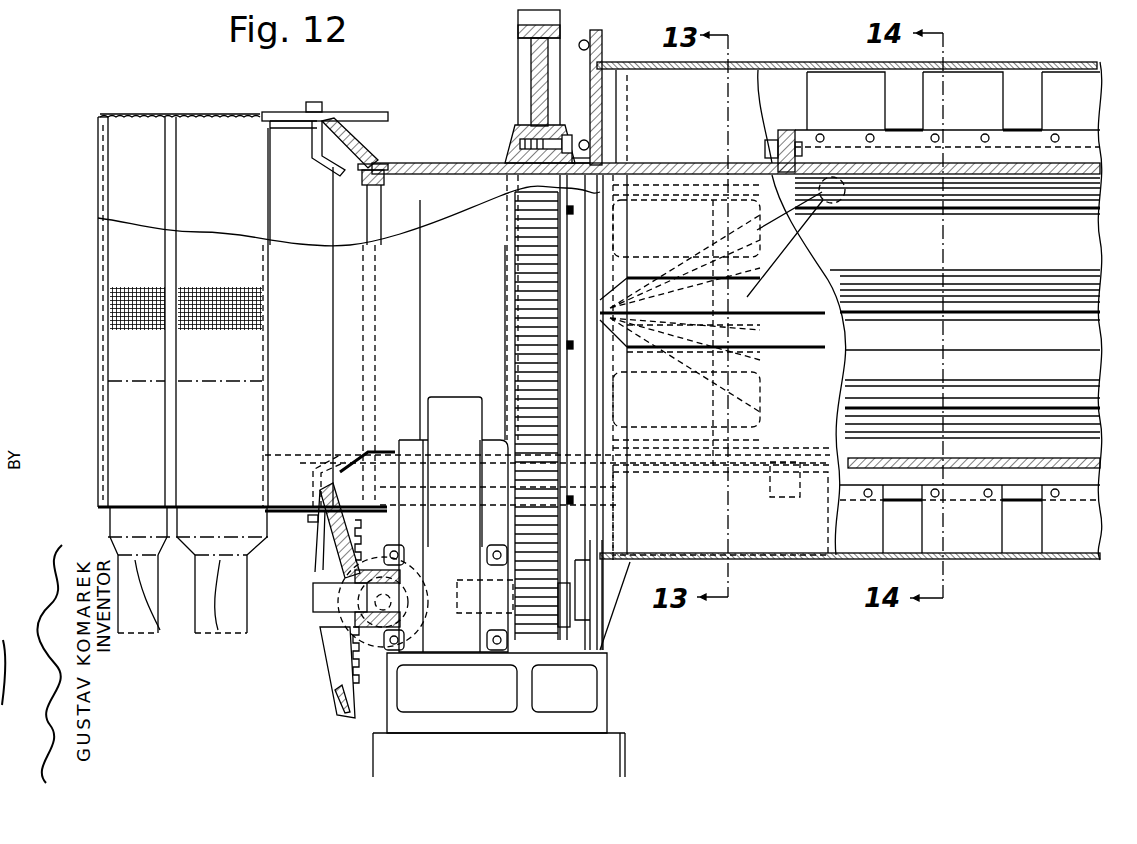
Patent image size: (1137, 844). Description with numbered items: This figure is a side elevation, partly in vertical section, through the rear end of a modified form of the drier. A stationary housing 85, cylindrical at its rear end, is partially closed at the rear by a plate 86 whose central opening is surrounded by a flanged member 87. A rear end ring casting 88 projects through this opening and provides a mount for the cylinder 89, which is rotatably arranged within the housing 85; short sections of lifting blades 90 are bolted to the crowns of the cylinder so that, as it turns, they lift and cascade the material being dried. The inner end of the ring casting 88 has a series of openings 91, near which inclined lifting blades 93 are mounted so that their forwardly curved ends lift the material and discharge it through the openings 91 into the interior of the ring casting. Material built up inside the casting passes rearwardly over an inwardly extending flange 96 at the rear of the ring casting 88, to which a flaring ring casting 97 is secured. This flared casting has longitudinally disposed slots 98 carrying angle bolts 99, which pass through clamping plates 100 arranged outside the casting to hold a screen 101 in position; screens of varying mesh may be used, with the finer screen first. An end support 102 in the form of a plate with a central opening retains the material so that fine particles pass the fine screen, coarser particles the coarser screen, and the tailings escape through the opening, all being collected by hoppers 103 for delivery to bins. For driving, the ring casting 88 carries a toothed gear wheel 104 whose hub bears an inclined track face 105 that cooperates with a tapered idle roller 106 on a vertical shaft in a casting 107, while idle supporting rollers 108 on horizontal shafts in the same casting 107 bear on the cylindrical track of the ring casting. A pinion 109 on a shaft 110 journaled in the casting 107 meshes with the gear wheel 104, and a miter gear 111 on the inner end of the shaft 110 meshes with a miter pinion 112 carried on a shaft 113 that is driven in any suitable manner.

The stationary housing 85 is at (1020, 62).
The plate 86 is at (590, 98).
The flanged member 87 is at (574, 153).
The rear end ring casting 88 is at (440, 163).
The cylinder 89 is at (907, 175).
The lifting blades 90 is at (947, 312).
The openings 91 is at (796, 237).
The inclined lifting blades 93 is at (753, 87).
The inwardly extending flange 96 is at (386, 192).
The flaring ring casting 97 is at (360, 145).
The longitudinally disposed slots 98 is at (296, 128).
The angle bolts 99 is at (318, 160).
The clamping plates 100 is at (342, 112).
The screen 101 is at (217, 117).
The end support 102 is at (97, 170).
The hoppers 103 is at (60, 350).
The toothed gear wheel 104 is at (527, 65).
The inclined track face 105 is at (520, 143).
The tapered idle roller 106 is at (395, 503).
The casting 107 is at (403, 527).
The idle supporting rollers 108 is at (450, 407).
The pinion 109 is at (573, 555).
The shaft 110 is at (318, 602).
The miter gear 111 is at (328, 548).
The miter pinion 112 is at (328, 632).
The shaft 113 is at (388, 604).